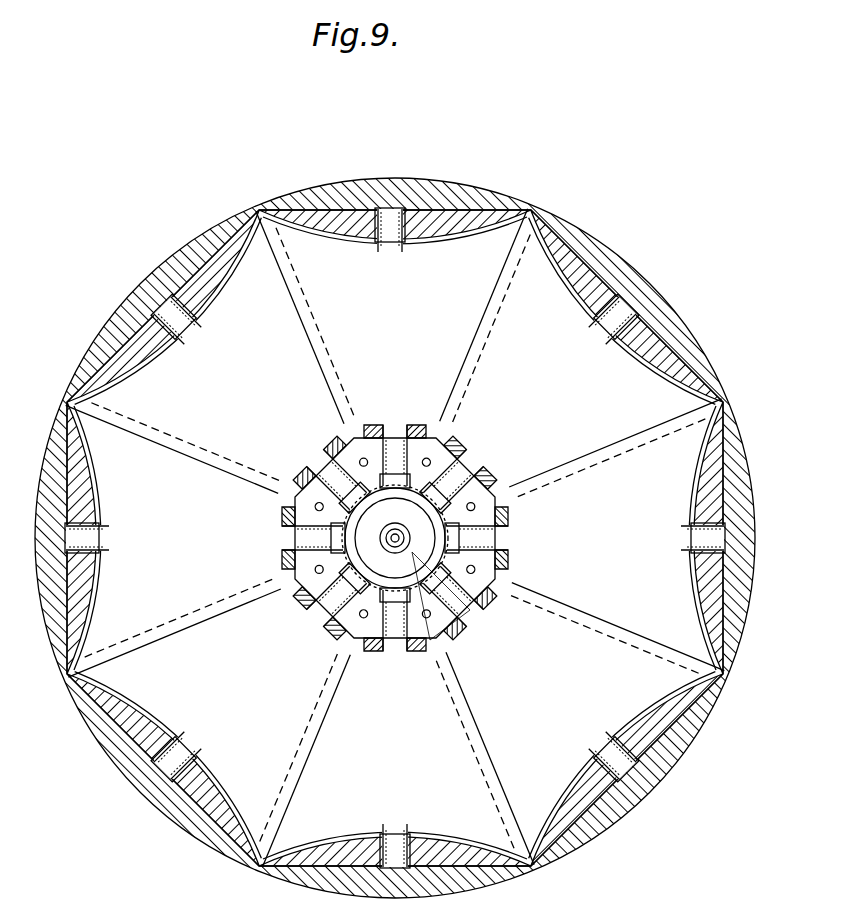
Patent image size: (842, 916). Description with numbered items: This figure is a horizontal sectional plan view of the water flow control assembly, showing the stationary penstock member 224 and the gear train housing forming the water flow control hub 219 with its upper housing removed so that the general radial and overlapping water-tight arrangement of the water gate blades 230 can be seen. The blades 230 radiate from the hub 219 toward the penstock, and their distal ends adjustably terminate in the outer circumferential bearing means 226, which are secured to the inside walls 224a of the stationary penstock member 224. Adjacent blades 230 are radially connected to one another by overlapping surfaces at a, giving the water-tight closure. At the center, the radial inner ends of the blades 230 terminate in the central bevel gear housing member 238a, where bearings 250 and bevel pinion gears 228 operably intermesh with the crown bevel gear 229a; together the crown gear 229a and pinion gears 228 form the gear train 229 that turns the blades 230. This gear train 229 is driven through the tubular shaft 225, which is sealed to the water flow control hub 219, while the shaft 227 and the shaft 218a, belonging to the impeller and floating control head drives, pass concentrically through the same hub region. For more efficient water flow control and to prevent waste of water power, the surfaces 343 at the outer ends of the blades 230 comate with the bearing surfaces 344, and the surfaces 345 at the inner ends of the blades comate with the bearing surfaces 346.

The stationary penstock member 224 is at (409, 184).
The inside walls 224a is at (532, 222).
The outer circumferential bearing means 226 is at (428, 213).
The surfaces of the outer ends of blades 343 is at (453, 232).
The bearing surfaces 344 is at (478, 222).
The overlapping surfaces a is at (471, 343).
The pinion gears 228 is at (380, 437).
The bearing surfaces 346 is at (428, 430).
The surfaces of the inner ends of blades 345 is at (412, 424).
The crown bevel gear 229a is at (322, 488).
The gear train 229 is at (462, 516).
The bearings 250 is at (333, 631).
The water flow control hub 219 is at (478, 501).
The central bevel gear housing member 238a is at (482, 574).
The shaft 227 is at (352, 534).
The tubular shaft 225 is at (408, 527).
The shaft 218a is at (396, 548).
The water flow control blades 230 is at (422, 617).